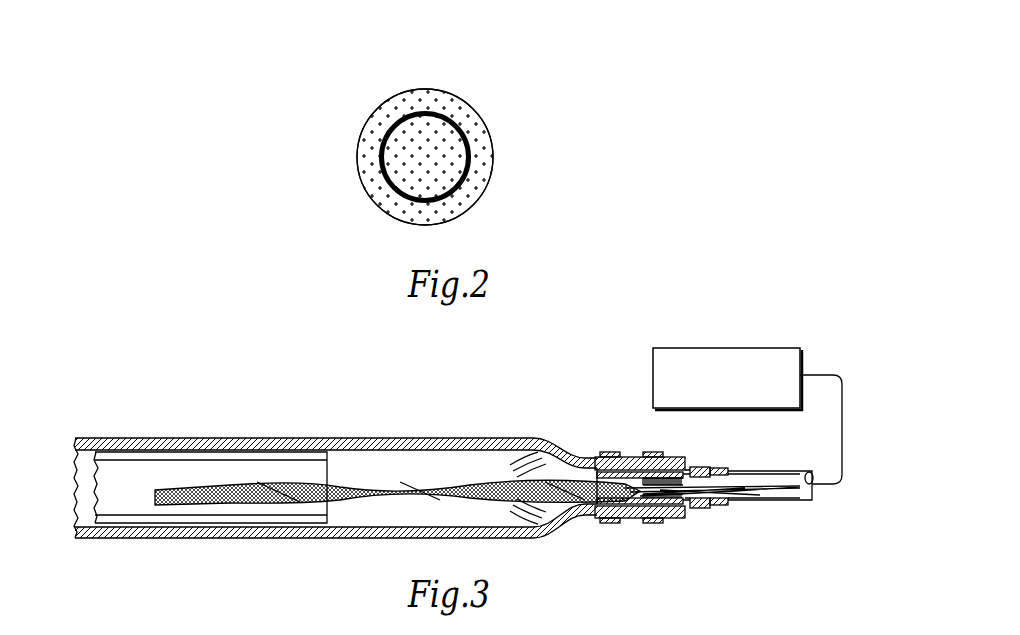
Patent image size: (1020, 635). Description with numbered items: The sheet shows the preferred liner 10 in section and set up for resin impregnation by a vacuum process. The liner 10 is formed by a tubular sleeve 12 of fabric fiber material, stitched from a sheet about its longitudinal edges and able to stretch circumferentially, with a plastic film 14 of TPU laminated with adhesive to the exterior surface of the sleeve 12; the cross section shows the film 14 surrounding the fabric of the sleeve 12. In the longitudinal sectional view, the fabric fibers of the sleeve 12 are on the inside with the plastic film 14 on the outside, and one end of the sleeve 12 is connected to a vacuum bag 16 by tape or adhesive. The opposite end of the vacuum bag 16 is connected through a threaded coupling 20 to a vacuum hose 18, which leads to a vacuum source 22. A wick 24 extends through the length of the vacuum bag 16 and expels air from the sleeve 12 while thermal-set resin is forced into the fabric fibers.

In FIG. 2, the liner 10 is at (433, 48).
In FIG. 3, the liner 10 is at (116, 518).
In FIG. 2, the tubular sleeve 12 is at (477, 150).
In FIG. 3, the tubular sleeve 12 is at (306, 452).
In FIG. 2, the plastic film 14 is at (457, 92).
In FIG. 3, the vacuum bag 16 is at (541, 442).
In FIG. 3, the vacuum hose 18 is at (841, 437).
In FIG. 3, the threaded coupling 20 is at (640, 455).
In FIG. 3, the vacuum source 22 is at (662, 380).
In FIG. 3, the wick 24 is at (433, 489).